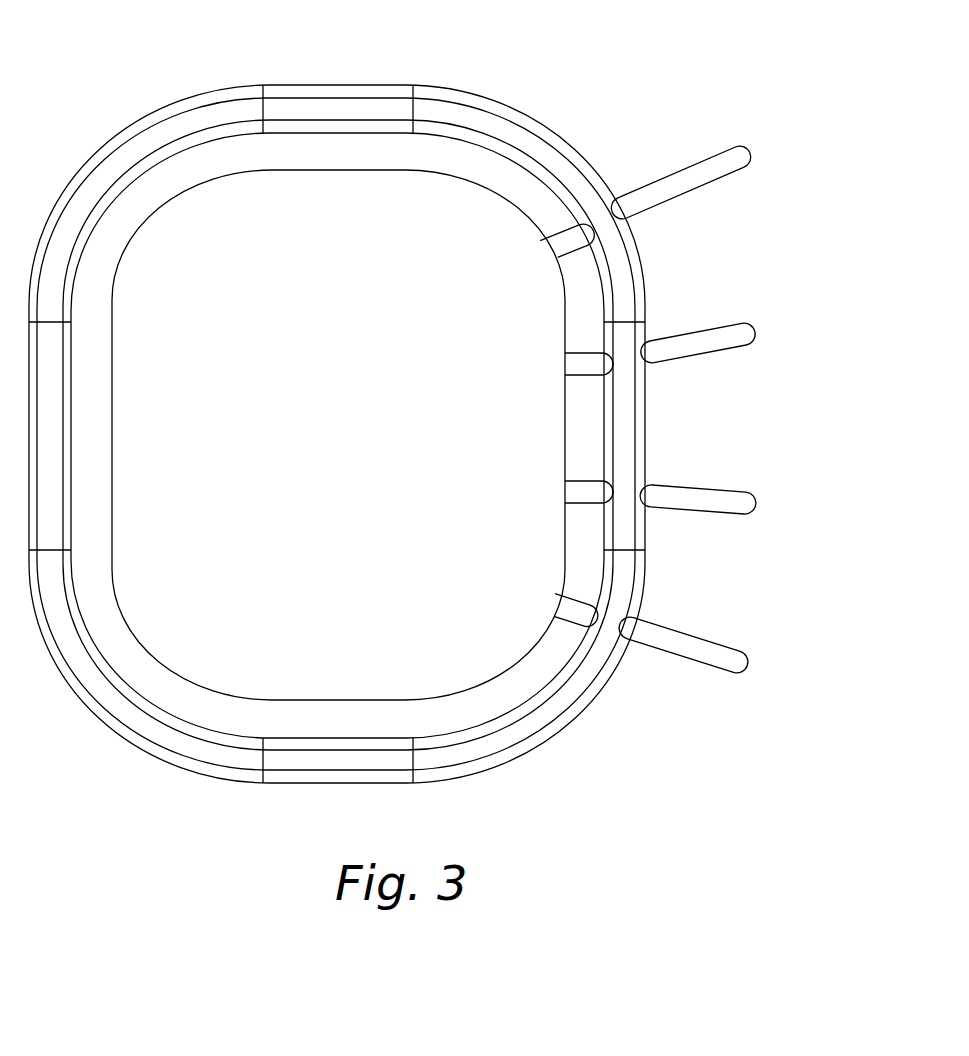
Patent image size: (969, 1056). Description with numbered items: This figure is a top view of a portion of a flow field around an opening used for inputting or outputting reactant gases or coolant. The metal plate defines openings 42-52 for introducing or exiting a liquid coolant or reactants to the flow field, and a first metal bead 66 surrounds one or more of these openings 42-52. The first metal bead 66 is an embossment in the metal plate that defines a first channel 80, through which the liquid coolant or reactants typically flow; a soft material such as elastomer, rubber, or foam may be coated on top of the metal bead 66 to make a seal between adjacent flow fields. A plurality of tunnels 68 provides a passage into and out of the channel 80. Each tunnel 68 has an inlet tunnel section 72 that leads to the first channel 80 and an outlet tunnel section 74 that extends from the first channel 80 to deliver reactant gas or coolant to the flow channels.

The openings 42-52 is at (356, 436).
The first metal bead 66 is at (592, 212).
The plurality of tunnels 68 is at (679, 160).
The inlet tunnel section 72 is at (560, 245).
The outlet tunnel section 74 is at (728, 162).
The first channel 80 is at (573, 688).